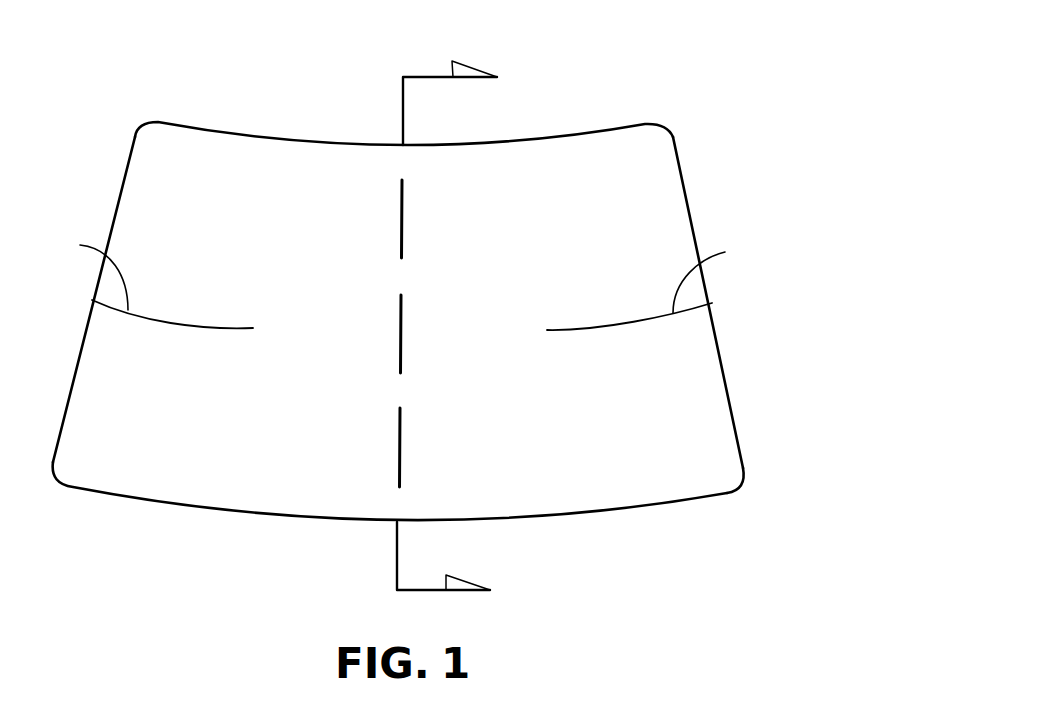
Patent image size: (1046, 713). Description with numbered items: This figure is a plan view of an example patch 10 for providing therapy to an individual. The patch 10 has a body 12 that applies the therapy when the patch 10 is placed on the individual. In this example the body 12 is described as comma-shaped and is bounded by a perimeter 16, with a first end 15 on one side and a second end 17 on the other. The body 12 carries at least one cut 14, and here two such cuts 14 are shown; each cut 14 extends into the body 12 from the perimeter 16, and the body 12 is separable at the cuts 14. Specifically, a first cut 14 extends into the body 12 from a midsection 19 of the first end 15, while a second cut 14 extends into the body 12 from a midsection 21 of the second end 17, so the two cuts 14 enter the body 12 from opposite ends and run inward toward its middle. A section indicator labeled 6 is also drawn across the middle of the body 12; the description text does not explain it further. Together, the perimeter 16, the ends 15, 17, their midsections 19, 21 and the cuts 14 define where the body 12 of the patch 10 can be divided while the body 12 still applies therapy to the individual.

The patch 10 is at (652, 70).
The body 12 is at (648, 197).
The cut 14 is at (402, 270).
The first end 15 is at (70, 385).
The perimeter 16 is at (743, 468).
The second end 17 is at (733, 415).
The midsection of the first end 19 is at (93, 300).
The midsection of the second end 21 is at (709, 304).
The section line 6- 6 is at (467, 335).